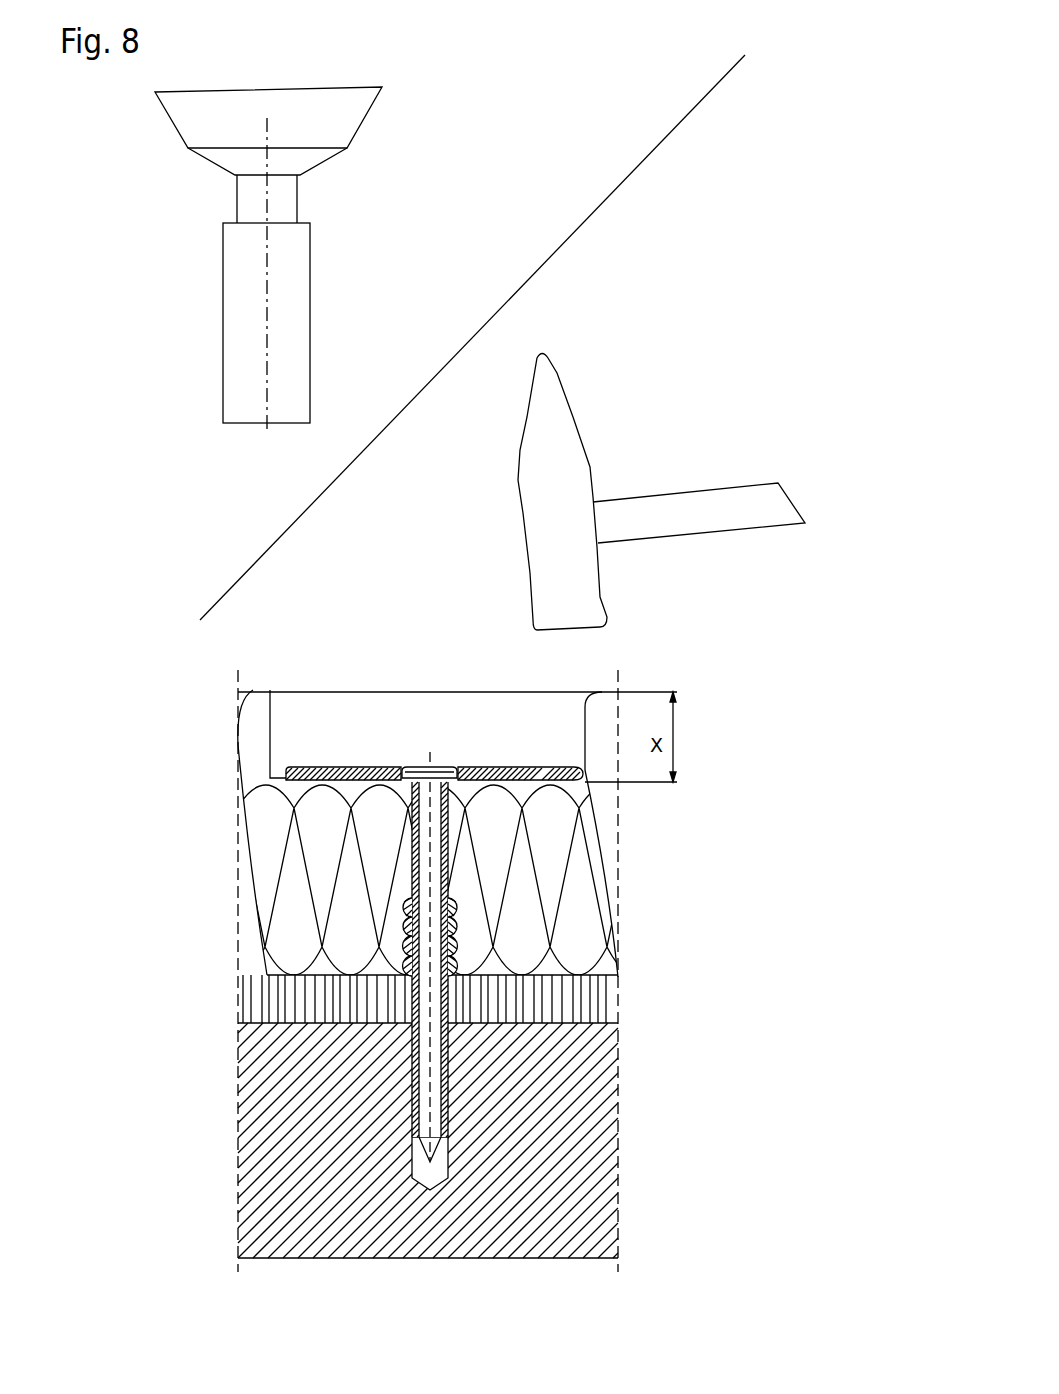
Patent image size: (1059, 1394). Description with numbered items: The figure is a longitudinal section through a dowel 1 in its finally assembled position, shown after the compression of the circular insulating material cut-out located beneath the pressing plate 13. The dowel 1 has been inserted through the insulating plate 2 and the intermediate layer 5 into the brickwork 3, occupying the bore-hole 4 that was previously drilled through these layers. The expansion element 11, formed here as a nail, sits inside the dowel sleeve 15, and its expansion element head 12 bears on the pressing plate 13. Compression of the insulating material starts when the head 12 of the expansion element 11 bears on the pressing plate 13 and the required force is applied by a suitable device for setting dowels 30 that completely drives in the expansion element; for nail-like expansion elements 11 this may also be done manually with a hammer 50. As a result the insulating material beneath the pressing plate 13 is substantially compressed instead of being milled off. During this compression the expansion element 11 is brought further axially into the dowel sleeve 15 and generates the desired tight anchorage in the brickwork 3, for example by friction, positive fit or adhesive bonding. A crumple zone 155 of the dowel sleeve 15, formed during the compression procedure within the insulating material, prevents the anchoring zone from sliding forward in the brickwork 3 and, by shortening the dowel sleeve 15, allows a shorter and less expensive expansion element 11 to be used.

The dowel 1 is at (402, 966).
The insulating plate 2 is at (550, 850).
The brickwork 3 is at (560, 1120).
The bore-hole 4 is at (443, 1170).
The intermediate layer 5 is at (587, 1003).
The expansion element 11 is at (430, 823).
The expansion element head 12 is at (436, 768).
The pressing plate 13 is at (527, 770).
The dowel sleeve 15 is at (407, 867).
The crumple zone 155 is at (405, 932).
The device for setting dowels 30 is at (322, 118).
The hammer 50 is at (675, 482).